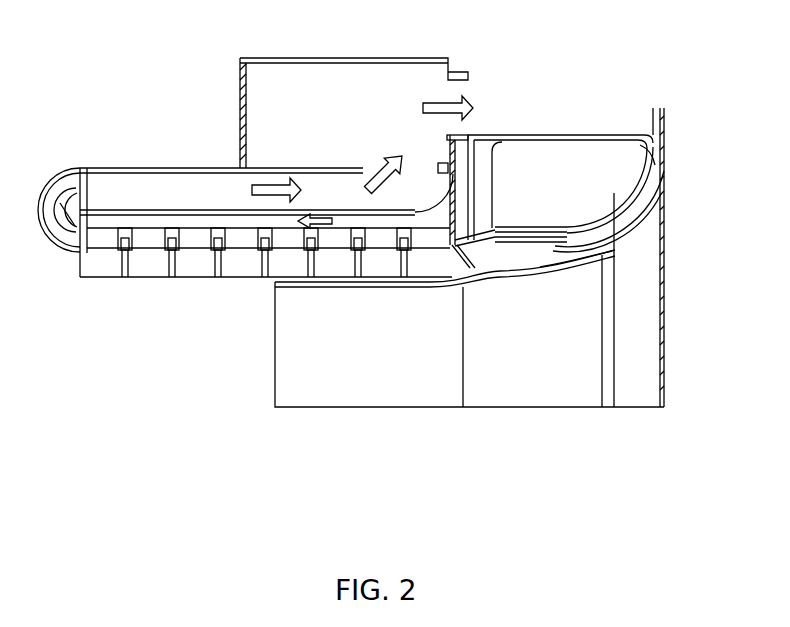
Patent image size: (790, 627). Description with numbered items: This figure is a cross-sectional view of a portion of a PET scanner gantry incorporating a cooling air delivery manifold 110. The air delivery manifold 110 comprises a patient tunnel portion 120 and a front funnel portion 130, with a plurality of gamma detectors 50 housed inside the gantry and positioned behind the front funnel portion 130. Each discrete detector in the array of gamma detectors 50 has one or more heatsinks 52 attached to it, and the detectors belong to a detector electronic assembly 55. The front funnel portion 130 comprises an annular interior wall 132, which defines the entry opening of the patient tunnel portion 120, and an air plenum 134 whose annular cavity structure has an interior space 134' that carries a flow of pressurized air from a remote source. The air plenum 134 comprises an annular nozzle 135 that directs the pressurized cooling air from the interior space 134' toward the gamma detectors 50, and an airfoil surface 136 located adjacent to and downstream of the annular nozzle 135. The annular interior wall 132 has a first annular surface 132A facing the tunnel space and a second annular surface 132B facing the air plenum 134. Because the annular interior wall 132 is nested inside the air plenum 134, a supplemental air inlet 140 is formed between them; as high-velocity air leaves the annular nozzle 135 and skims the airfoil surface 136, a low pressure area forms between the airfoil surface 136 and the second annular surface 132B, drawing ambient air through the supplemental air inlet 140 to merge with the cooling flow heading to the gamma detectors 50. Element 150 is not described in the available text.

The gamma detectors 50 is at (147, 267).
The heatsinks 52 is at (187, 237).
The detector electronic assembly (DEA) 55 is at (175, 300).
The cooling air delivery manifold 110 is at (622, 345).
The patient tunnel portion 120 is at (458, 430).
The front funnel portion 130 is at (648, 433).
The annular interior wall 132 is at (525, 302).
The first annular surface 132A is at (555, 342).
The second annular surface 132B is at (483, 265).
The air plenum 134 is at (560, 88).
The interior space 134' is at (686, 147).
The annular nozzle 135 is at (570, 230).
The airfoil surface 136 is at (497, 252).
The supplemental air inlet 140 is at (598, 246).
The recirculation duct 150 is at (187, 175).